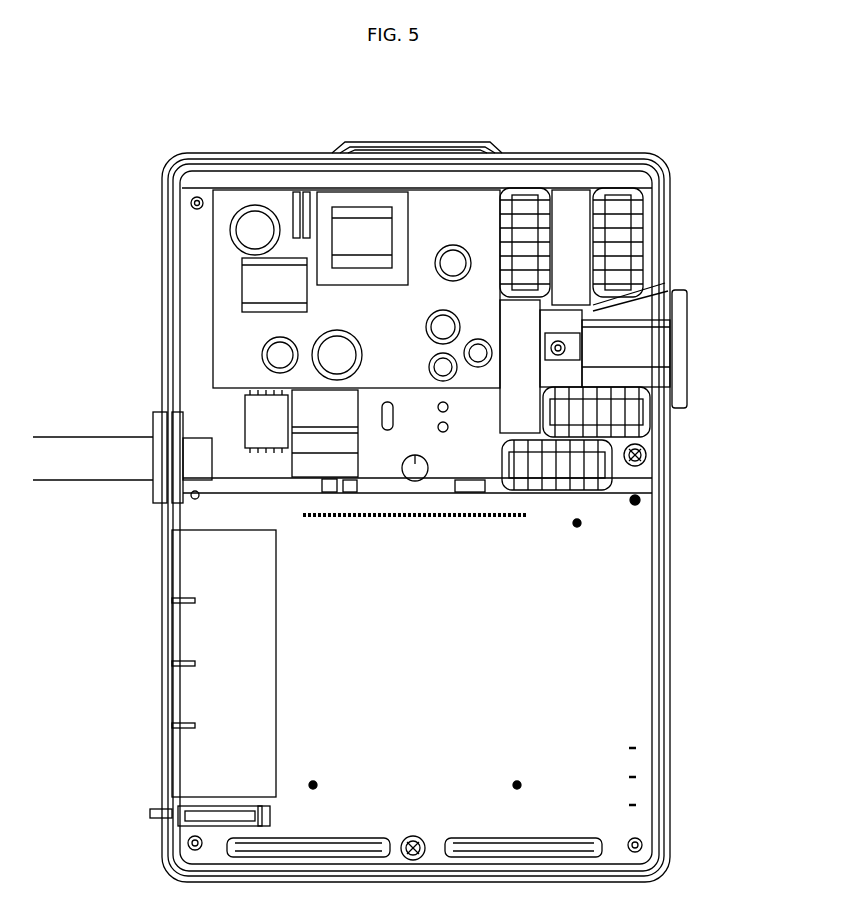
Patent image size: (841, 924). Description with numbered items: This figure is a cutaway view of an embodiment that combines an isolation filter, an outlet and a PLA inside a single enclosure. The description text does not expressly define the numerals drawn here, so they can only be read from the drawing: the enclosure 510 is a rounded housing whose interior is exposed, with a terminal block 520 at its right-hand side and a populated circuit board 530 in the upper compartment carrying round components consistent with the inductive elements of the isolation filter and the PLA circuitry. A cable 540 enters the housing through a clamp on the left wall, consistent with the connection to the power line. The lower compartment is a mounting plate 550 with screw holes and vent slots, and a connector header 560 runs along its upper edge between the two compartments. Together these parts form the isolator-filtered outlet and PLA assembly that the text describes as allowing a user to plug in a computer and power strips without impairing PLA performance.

The enclosure housing 510 is at (617, 467).
The terminal block 520 is at (687, 303).
The controller circuit board 530 is at (212, 280).
The power cable 540 is at (60, 437).
The mounting plate 550 is at (393, 672).
The connector header 560 is at (305, 515).